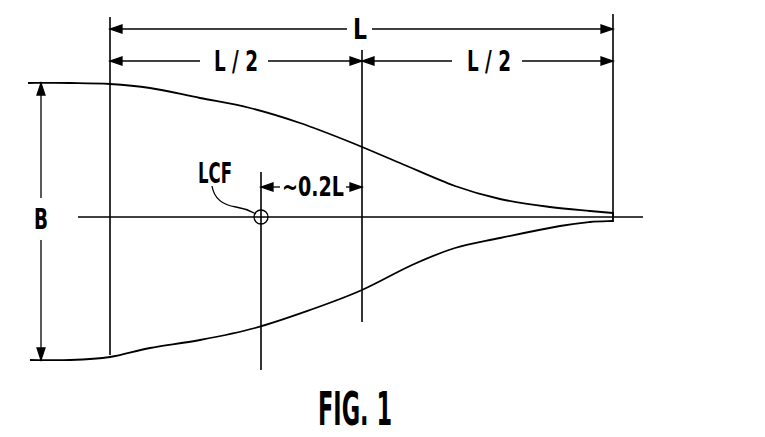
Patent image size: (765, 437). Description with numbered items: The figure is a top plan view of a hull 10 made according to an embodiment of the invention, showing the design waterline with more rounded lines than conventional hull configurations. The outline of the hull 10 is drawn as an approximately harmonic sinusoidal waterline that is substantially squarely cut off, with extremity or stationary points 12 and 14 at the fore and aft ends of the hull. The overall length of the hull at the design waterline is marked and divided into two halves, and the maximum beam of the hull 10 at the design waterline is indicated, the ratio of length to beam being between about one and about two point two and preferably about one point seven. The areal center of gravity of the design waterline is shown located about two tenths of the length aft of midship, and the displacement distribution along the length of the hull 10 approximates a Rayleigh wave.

The hull 10 is at (468, 188).
The extremity or stationary point 12 is at (615, 211).
The extremity or stationary point 14 is at (110, 330).